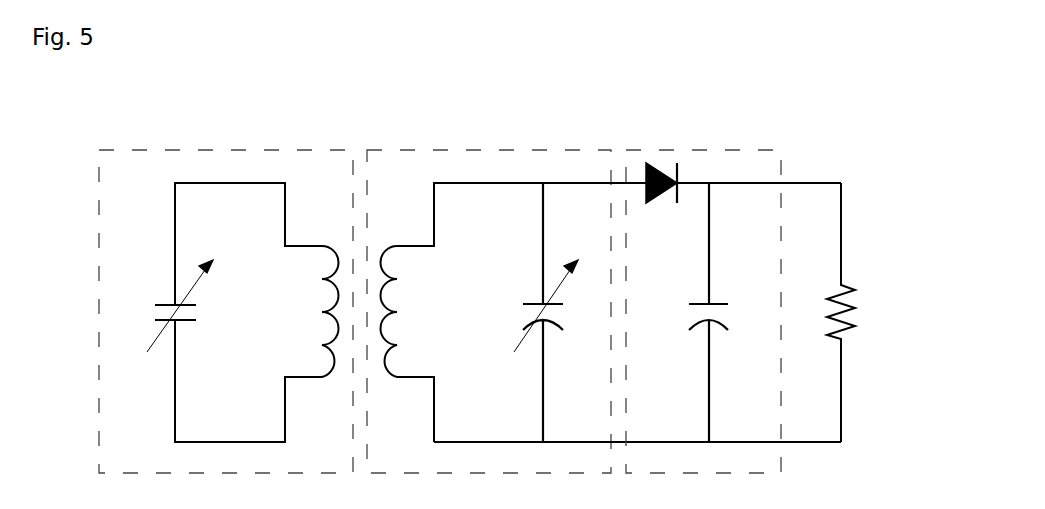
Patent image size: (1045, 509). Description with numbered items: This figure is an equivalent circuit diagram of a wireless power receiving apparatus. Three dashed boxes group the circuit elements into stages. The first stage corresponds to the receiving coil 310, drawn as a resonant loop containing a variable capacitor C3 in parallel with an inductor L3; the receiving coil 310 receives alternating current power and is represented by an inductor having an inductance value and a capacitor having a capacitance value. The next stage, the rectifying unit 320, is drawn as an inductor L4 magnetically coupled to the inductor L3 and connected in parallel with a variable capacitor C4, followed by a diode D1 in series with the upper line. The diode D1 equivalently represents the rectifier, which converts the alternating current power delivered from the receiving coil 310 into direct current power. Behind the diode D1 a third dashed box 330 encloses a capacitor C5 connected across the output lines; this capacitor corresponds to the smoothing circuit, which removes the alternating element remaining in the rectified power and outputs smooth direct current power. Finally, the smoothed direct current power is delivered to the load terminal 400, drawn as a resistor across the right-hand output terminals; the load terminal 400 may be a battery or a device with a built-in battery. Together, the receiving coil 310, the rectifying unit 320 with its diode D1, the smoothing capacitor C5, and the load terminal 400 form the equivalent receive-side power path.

The receiving coil 310 is at (226, 279).
The rectifying unit 320 is at (604, 279).
The rectifier circuit 330 is at (703, 279).
The load terminal 400 is at (859, 281).
The capacitor C3 is at (167, 306).
The inductor L3 is at (299, 313).
The inductor L4 is at (420, 313).
The variable capacitor C4 is at (556, 312).
The capacitor C5 is at (726, 312).
The diode D1 is at (661, 197).